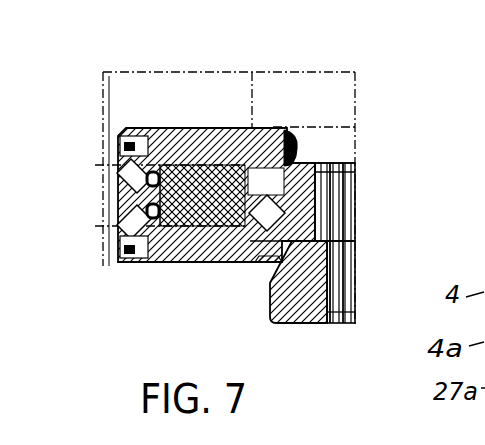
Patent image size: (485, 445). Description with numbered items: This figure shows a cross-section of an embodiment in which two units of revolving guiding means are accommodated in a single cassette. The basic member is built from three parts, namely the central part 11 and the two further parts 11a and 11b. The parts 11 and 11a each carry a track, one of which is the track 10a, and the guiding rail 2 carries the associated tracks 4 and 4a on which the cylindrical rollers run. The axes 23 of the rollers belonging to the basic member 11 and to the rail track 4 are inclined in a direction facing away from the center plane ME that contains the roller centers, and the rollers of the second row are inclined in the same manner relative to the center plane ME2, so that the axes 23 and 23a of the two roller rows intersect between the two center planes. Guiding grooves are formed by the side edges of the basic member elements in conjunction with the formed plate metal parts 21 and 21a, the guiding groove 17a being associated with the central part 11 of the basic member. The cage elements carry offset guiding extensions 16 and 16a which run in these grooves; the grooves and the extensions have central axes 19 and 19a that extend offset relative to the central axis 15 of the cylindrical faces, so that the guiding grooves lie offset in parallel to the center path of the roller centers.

The basic member central part 11 is at (172, 166).
The basic member part 11a is at (225, 205).
The basic member part 11b is at (193, 178).
The central axis of the cylindrical faces 15 is at (124, 181).
The formed plate metal part 21 is at (118, 145).
The formed plate metal part 21a is at (120, 252).
The center plane of first roller row ME is at (94, 164).
The center plane of second roller row ME2 is at (98, 227).
The offset guiding extension 16 is at (268, 160).
The offset guiding extension 16a is at (365, 142).
The track of the guiding rail 4 is at (356, 173).
The track of the guiding rail 4a is at (355, 241).
The roller axis 23 is at (315, 190).
The roller axis 23a is at (405, 243).
The guiding rail 2 is at (290, 310).
The track of the basic member 10a is at (146, 266).
The guiding groove 17a is at (213, 262).
The central axis of guiding groove 19 is at (273, 118).
The central axis of guiding groove 19a is at (252, 97).